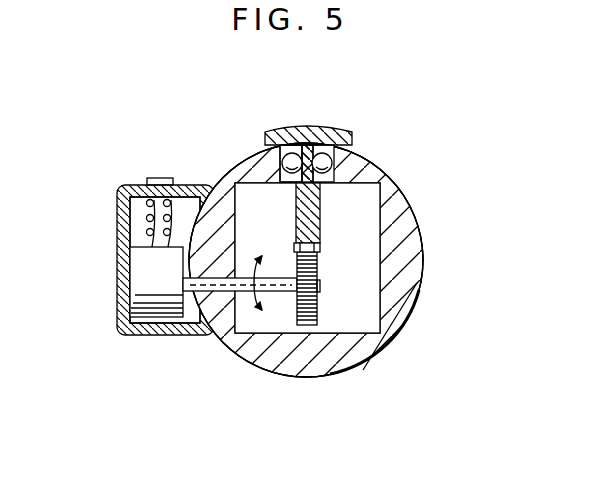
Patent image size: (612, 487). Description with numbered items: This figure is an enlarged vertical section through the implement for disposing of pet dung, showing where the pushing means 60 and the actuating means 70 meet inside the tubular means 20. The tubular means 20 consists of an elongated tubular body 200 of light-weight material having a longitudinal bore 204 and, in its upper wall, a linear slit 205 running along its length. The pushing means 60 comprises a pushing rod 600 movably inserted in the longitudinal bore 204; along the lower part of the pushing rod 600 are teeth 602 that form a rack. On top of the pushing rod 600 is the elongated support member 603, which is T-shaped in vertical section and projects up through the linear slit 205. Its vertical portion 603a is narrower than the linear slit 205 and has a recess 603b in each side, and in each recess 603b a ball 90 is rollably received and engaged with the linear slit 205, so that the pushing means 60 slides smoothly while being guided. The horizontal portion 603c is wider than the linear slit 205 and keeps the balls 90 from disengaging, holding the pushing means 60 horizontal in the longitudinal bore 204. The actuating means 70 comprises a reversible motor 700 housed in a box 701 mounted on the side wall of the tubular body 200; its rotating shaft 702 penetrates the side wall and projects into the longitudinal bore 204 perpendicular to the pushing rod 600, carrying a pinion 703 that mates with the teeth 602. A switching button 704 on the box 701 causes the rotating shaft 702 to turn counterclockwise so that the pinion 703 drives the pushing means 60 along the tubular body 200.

The tubular means 20 is at (343, 377).
The pushing means 60 is at (328, 226).
The actuating means 70 is at (189, 316).
The ball 90 is at (282, 160).
The tubular body 200 is at (421, 287).
The longitudinal bore 204 is at (350, 310).
The linear slit 205 is at (331, 150).
The pushing rod 600 is at (320, 208).
The teeth 602 is at (407, 328).
The support member 603 is at (309, 128).
The vertical portion 603a is at (309, 162).
The recess 603b is at (291, 153).
The horizontal portion 603c is at (282, 146).
The reversible motor 700 is at (138, 268).
The box 701 is at (120, 220).
The rotating shaft 702 is at (277, 296).
The pinion 703 is at (308, 327).
The switching button 704 is at (162, 178).